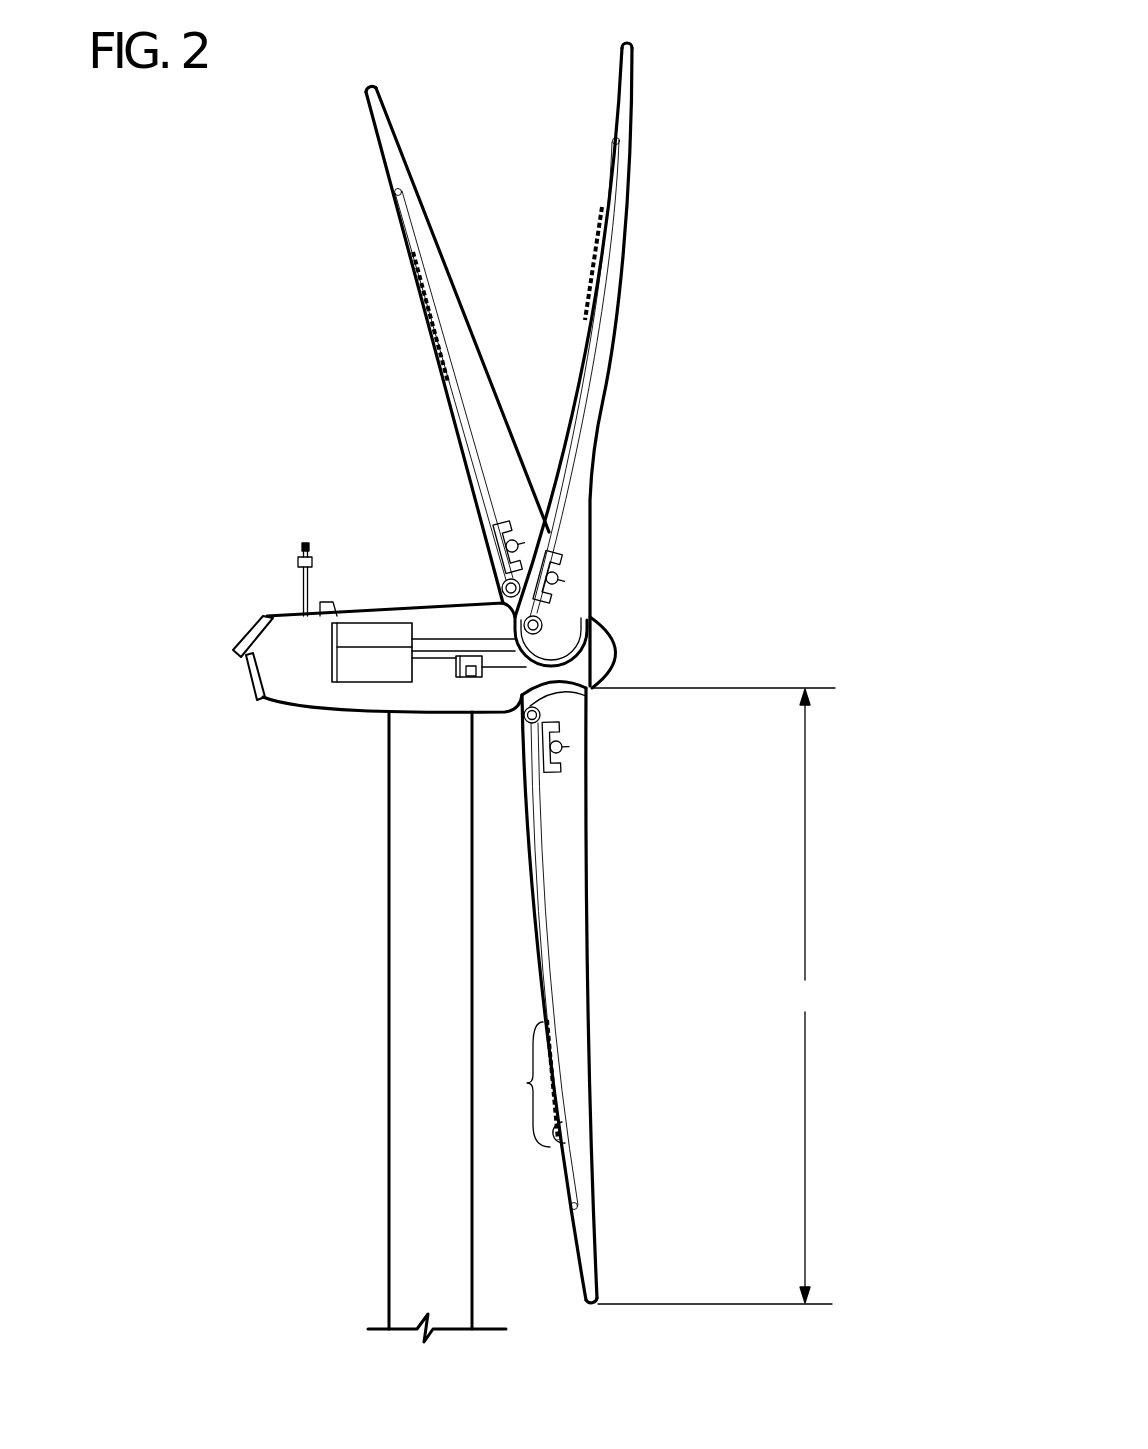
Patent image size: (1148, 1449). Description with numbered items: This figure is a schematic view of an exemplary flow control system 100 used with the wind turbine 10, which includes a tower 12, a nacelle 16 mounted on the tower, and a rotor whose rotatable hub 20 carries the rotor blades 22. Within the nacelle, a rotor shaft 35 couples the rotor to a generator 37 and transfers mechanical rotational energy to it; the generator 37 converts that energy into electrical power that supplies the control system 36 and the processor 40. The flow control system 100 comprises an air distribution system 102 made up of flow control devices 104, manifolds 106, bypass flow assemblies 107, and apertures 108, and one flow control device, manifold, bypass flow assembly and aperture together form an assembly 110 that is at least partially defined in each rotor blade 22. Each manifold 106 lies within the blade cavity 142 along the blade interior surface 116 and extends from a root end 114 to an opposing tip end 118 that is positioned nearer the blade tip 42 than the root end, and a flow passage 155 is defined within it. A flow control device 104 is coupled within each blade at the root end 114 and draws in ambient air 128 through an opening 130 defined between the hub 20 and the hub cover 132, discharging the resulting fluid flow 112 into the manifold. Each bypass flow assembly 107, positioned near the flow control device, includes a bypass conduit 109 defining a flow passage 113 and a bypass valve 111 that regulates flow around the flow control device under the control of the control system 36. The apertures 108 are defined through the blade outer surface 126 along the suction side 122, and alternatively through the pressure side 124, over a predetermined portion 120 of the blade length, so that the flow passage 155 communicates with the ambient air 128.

The wind turbine 10 is at (725, 160).
The tower 12 is at (390, 1013).
The nacelle 16 is at (300, 708).
The hub 20 is at (620, 639).
The rotor blade 22 is at (470, 461).
The rotor shaft 35 is at (440, 638).
The control system 36 is at (468, 657).
The generator 37 is at (357, 647).
The processor 40 is at (468, 678).
The tip 42 is at (630, 44).
The flow control system 100 is at (770, 520).
The air distribution system 102 is at (395, 372).
The flow control device 104 is at (497, 545).
The manifold 106 is at (464, 402).
The bypass flow assembly 107 is at (597, 577).
The aperture 108 is at (414, 257).
The bypass conduit 109 is at (565, 748).
The assembly 110 is at (650, 113).
The bypass valve 111 is at (562, 752).
The fluid flow 112 is at (597, 237).
The flow passage 113 is at (553, 773).
The root end 114 is at (527, 739).
The interior surface 116 is at (388, 176).
The tip end 118 is at (560, 1190).
The predetermined portion 120 is at (519, 1084).
The suction side 122 is at (427, 305).
The pressure side 124 is at (447, 284).
The outer surface 126 is at (387, 172).
The ambient air 128 is at (728, 368).
The opening 130 is at (597, 689).
The hub cover 132 is at (608, 655).
The cavity 142 is at (596, 353).
The flow passage 155 is at (545, 856).